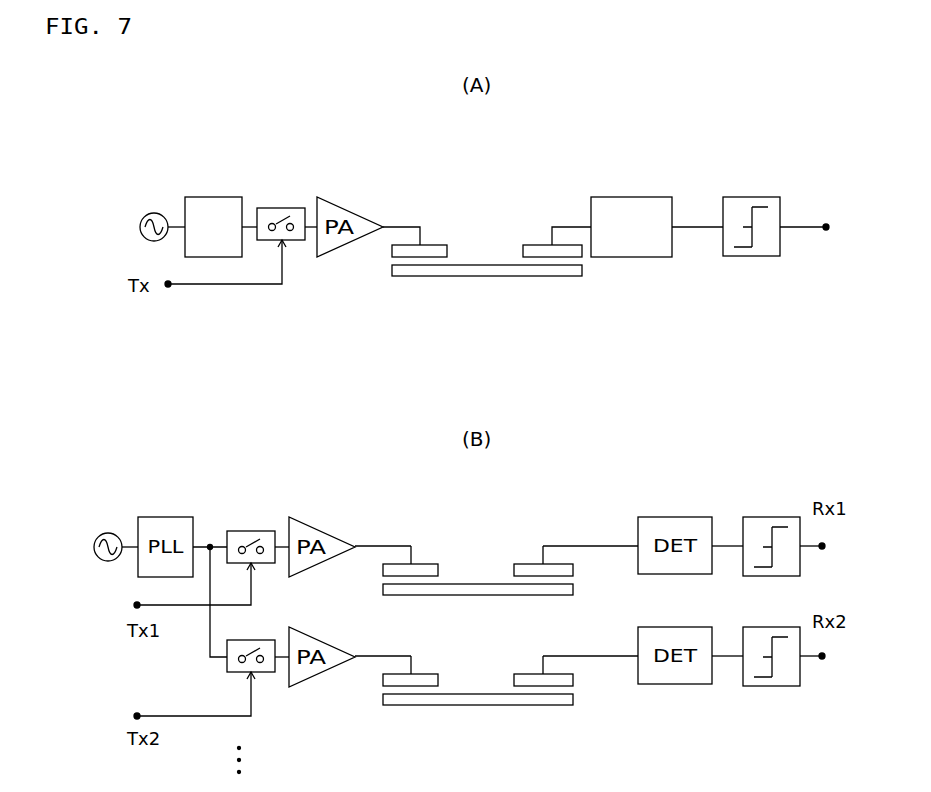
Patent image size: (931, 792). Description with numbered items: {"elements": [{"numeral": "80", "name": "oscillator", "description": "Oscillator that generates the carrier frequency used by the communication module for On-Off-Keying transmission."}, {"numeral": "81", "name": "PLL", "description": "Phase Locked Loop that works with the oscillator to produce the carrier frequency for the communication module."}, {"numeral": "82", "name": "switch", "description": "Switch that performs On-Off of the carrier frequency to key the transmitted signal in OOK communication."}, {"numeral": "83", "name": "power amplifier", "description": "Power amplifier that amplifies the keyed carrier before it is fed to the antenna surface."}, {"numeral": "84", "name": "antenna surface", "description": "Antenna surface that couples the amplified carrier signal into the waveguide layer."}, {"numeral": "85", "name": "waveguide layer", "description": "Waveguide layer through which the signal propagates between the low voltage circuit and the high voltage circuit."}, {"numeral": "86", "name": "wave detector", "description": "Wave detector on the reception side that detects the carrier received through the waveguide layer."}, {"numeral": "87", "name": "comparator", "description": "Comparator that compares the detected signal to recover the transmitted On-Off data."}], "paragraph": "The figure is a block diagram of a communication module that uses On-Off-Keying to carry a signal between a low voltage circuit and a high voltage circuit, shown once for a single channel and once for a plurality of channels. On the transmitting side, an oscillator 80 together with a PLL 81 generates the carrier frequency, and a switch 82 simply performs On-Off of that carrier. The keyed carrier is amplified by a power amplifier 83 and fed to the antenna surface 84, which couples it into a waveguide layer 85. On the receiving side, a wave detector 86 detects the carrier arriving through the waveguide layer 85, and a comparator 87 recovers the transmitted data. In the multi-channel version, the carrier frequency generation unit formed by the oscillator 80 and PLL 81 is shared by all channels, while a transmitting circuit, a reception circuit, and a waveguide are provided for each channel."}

The oscillator 80 is at (155, 211).
The PLL circuit 81 is at (217, 197).
The switch 82 is at (283, 208).
The power amplifier 83 is at (360, 217).
The coupling electrodes 84 is at (435, 245).
The transmission line electrode 85 is at (400, 278).
The detector 86 is at (652, 197).
The comparator 87 is at (745, 197).